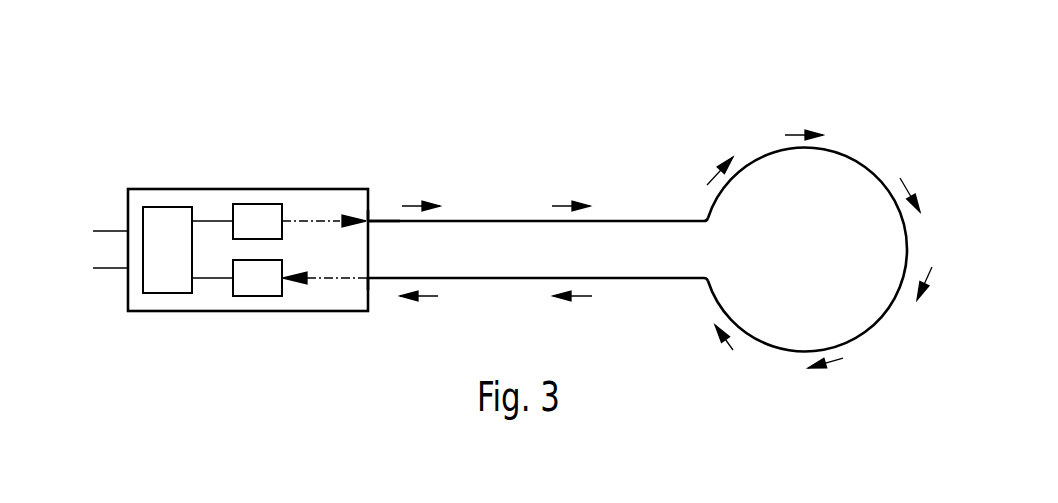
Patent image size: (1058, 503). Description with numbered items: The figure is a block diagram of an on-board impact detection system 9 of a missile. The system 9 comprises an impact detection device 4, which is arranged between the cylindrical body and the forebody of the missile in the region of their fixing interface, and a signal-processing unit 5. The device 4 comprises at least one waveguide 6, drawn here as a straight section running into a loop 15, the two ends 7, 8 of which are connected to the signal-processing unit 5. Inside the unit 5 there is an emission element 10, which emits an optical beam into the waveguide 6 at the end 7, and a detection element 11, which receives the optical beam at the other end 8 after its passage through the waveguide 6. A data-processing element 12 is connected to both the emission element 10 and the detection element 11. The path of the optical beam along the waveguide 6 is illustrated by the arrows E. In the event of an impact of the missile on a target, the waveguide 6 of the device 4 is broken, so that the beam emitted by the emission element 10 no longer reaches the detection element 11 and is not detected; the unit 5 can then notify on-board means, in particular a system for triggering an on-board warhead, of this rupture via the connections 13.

The impact detection device 4 is at (663, 187).
The signal-processing unit 5 is at (233, 311).
The waveguide 6 is at (492, 221).
The end of the waveguide 7 is at (383, 197).
The end of the waveguide 8 is at (387, 300).
The impact detection system 9 is at (386, 110).
The emission element 10 is at (255, 204).
The detection element 11 is at (268, 296).
The data-processing element 12 is at (163, 207).
The connections 13 is at (114, 268).
The fiber loop 15 is at (890, 138).
The arrows E is at (413, 206).